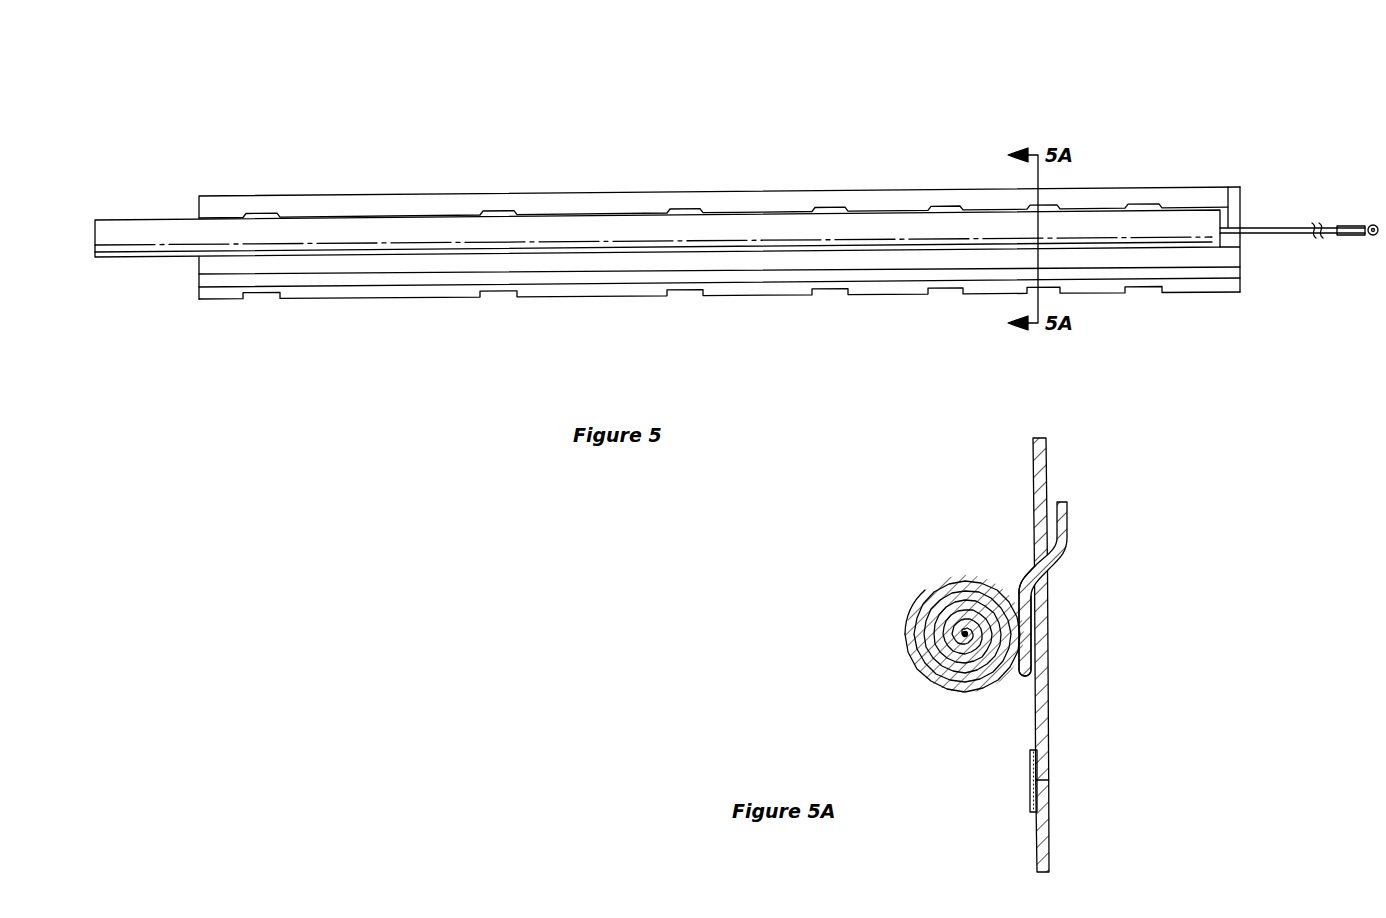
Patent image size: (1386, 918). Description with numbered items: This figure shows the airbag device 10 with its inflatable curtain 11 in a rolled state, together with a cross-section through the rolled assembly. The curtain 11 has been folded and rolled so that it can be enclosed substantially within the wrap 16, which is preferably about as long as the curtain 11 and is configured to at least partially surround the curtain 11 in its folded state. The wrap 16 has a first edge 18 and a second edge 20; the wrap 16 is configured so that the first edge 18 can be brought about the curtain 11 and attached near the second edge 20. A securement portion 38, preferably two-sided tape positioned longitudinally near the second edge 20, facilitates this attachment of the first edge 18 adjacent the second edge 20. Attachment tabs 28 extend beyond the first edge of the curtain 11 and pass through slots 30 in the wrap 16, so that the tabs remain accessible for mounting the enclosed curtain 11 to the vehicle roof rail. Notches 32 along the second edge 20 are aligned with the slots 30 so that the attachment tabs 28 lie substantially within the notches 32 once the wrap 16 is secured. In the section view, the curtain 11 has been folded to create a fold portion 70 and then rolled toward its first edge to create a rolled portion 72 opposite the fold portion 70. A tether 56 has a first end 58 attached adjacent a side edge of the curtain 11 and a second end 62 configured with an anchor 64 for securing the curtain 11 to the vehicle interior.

In FIG. 5, the airbag device 10 is at (725, 211).
In FIG. 5A, the airbag device 10 is at (975, 643).
In FIG. 5, the inflatable curtain 11 is at (145, 228).
In FIG. 5A, the inflatable curtain 11 is at (933, 676).
In FIG. 5, the wrap 16 is at (719, 162).
In FIG. 5A, the wrap 16 is at (1045, 718).
In FIG. 5A, the first edge 18 is at (1046, 447).
In FIG. 5, the second edge 20 is at (719, 313).
In FIG. 5A, the second edge 20 is at (1048, 842).
In FIG. 5A, the attachment tabs 28 is at (1068, 536).
In FIG. 5, the slots 30 is at (263, 216).
In FIG. 5A, the slots 30 is at (1030, 562).
In FIG. 5, the notches 32 is at (262, 297).
In FIG. 5, the securement portion 38 is at (1223, 273).
In FIG. 5A, the securement portion 38 is at (1030, 777).
In FIG. 5, the tether 56 is at (1270, 228).
In FIG. 5, the first end 58 is at (1228, 195).
In FIG. 5, the second end 62 is at (1338, 226).
In FIG. 5, the anchor 64 is at (1372, 236).
In FIG. 5A, the fold portion 70 is at (1023, 638).
In FIG. 5A, the rolled portion 72 is at (913, 620).